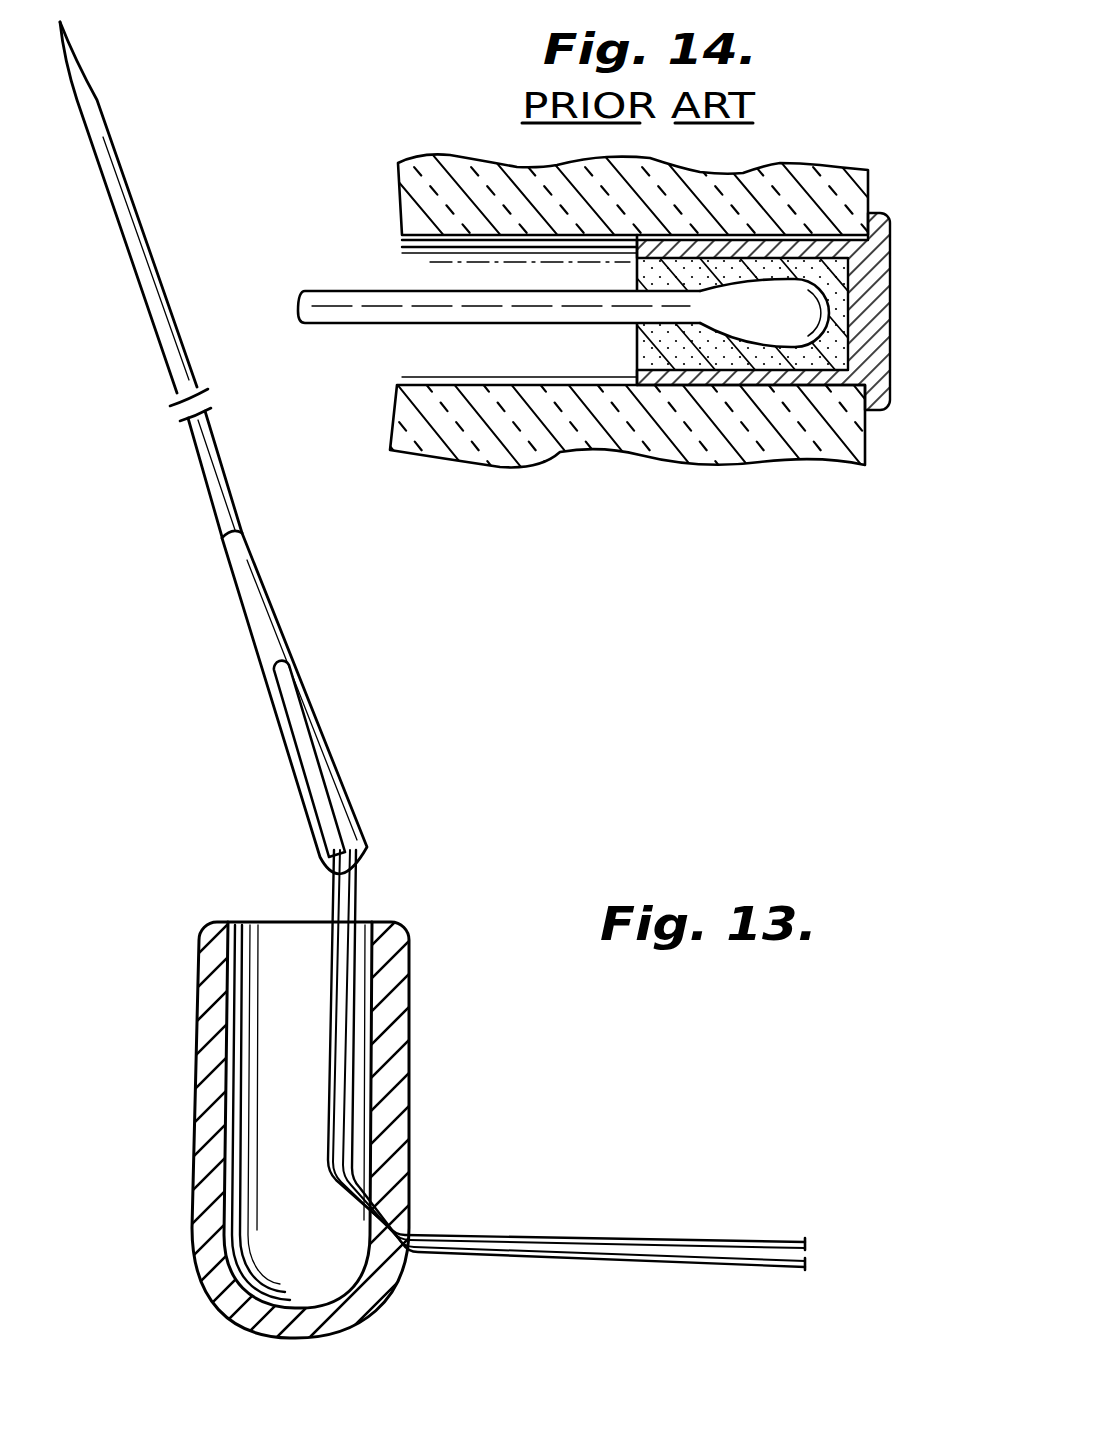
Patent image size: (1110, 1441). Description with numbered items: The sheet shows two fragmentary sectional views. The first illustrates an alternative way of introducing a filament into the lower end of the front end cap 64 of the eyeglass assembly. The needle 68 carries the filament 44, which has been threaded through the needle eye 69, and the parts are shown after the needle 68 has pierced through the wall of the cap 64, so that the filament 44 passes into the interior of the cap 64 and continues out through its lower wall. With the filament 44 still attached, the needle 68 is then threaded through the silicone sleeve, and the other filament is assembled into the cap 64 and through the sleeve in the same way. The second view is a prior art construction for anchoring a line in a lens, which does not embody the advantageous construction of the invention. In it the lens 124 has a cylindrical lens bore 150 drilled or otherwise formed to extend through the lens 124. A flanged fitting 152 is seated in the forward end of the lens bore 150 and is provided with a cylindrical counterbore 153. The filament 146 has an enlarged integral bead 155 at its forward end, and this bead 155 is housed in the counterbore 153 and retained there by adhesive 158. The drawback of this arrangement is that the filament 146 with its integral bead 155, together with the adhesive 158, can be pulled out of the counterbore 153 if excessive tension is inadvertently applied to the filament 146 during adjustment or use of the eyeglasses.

In FIG. 13, the filament 44 is at (357, 1062).
In FIG. 13, the front end cap 64 is at (175, 1072).
In FIG. 13, the needle 68 is at (215, 497).
In FIG. 13, the needle eye 69 is at (320, 784).
In FIG. 14, the lens 124 is at (577, 462).
In FIG. 14, the filament 146 is at (442, 307).
In FIG. 14, the lens bore 150 is at (405, 238).
In FIG. 14, the flanged fitting 152 is at (891, 268).
In FIG. 14, the counterbore 153 is at (650, 357).
In FIG. 14, the bead 155 is at (787, 322).
In FIG. 14, the adhesive 158 is at (713, 347).